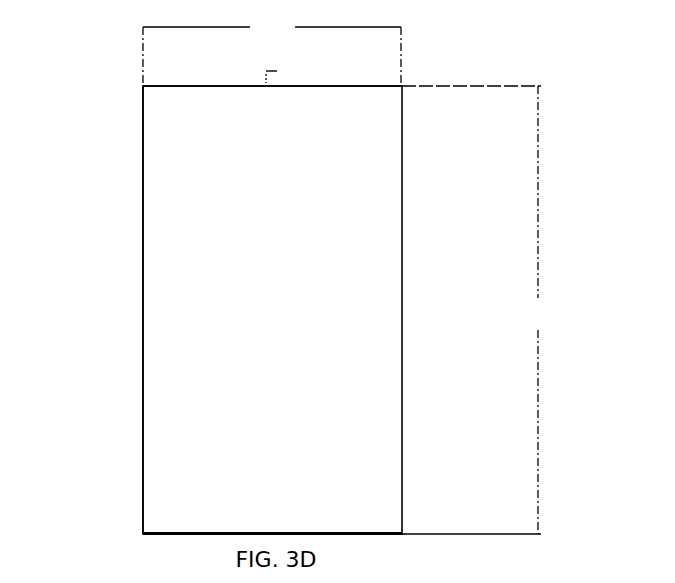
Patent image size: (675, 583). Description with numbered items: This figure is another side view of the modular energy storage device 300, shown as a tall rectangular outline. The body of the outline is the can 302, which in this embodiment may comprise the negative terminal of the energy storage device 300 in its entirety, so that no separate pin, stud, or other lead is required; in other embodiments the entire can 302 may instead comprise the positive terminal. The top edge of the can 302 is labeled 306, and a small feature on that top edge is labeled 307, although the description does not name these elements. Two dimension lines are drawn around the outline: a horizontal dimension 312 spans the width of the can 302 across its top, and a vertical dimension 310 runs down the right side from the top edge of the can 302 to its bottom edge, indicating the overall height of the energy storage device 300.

The energy storage device 300 is at (105, 453).
The can 302 is at (123, 264).
The top surface / edge of layer 306 is at (207, 82).
The feature on top surface 307 is at (284, 71).
The height dimension 310 is at (478, 310).
The width dimension 312 is at (272, 52).